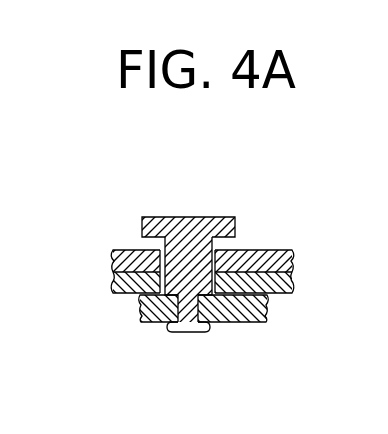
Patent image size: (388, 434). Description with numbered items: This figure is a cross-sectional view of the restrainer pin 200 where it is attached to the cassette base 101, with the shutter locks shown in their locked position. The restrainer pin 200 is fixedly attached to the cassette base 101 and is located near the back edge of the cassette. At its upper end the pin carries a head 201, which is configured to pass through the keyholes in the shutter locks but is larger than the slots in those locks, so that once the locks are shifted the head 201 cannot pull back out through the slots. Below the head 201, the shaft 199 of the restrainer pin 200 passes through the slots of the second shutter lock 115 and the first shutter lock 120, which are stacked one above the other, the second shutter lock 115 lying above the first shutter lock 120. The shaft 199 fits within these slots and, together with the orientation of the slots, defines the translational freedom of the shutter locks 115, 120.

The restrainer pin 200 is at (185, 228).
The head 201 is at (236, 219).
The shaft 199 is at (215, 243).
The second shutter lock 115 is at (113, 252).
The first shutter lock 120 is at (294, 283).
The cassette base 101 is at (140, 305).